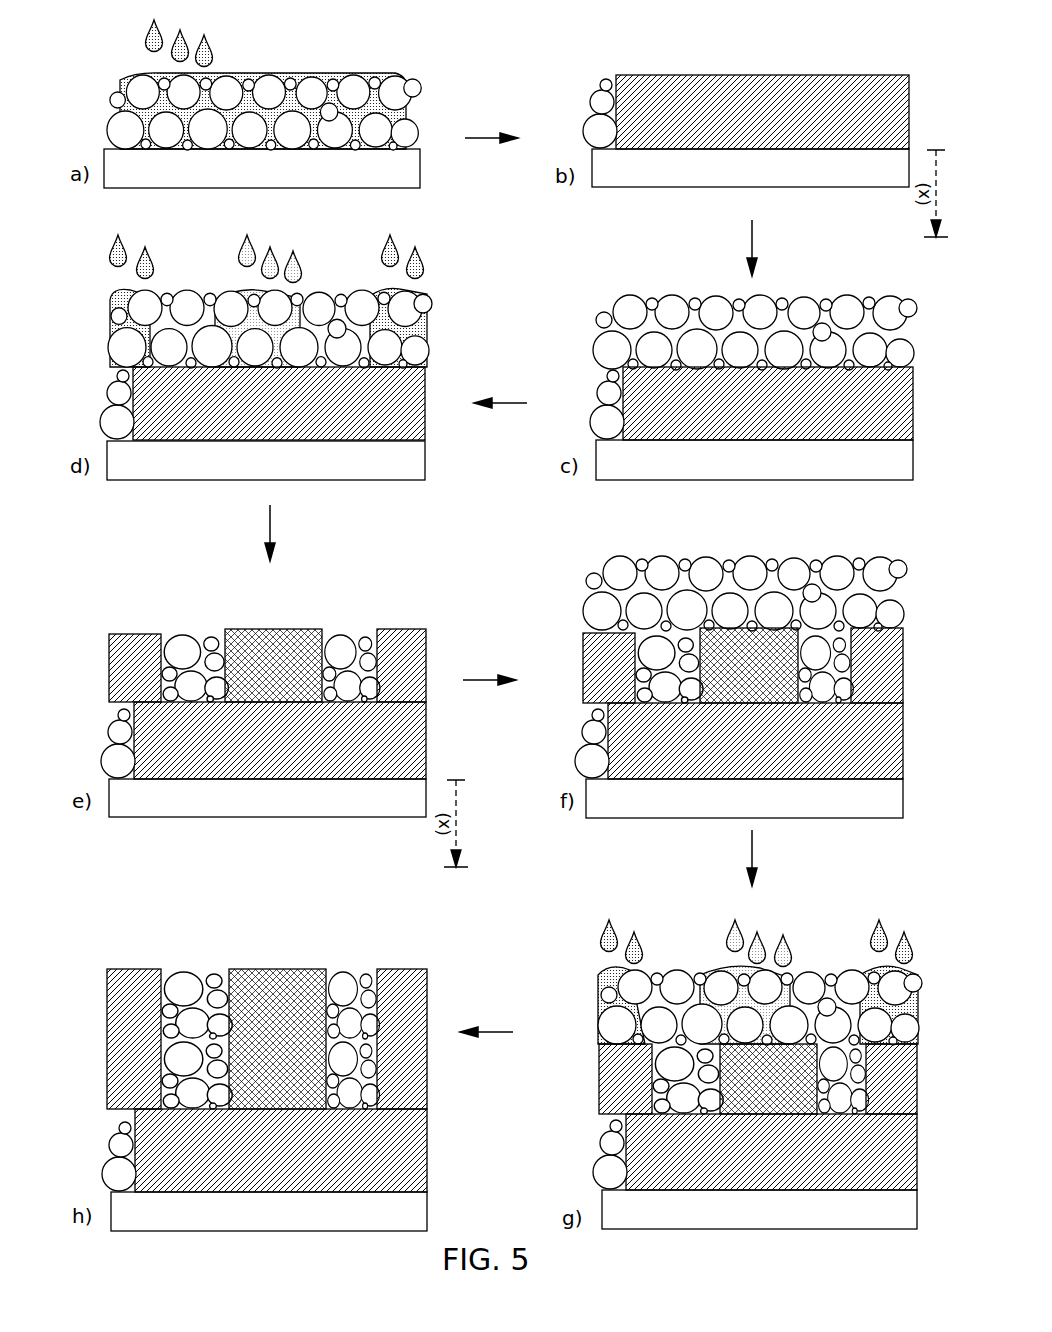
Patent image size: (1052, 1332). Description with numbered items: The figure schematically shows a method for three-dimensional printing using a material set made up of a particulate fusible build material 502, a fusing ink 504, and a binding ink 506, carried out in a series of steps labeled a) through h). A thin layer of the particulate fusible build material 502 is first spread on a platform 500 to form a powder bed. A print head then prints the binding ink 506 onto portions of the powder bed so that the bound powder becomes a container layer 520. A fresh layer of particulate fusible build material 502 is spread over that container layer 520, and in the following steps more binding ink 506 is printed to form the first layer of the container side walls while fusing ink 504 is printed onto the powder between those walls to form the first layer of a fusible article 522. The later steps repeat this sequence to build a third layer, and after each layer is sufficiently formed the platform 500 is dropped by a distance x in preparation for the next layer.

The platform 500 is at (280, 180).
The particulate fusible build material 502 is at (128, 131).
The fusing ink 504 is at (239, 253).
The binding ink 506 is at (148, 37).
The container layer 520 is at (763, 77).
The fusible article 522 is at (256, 643).